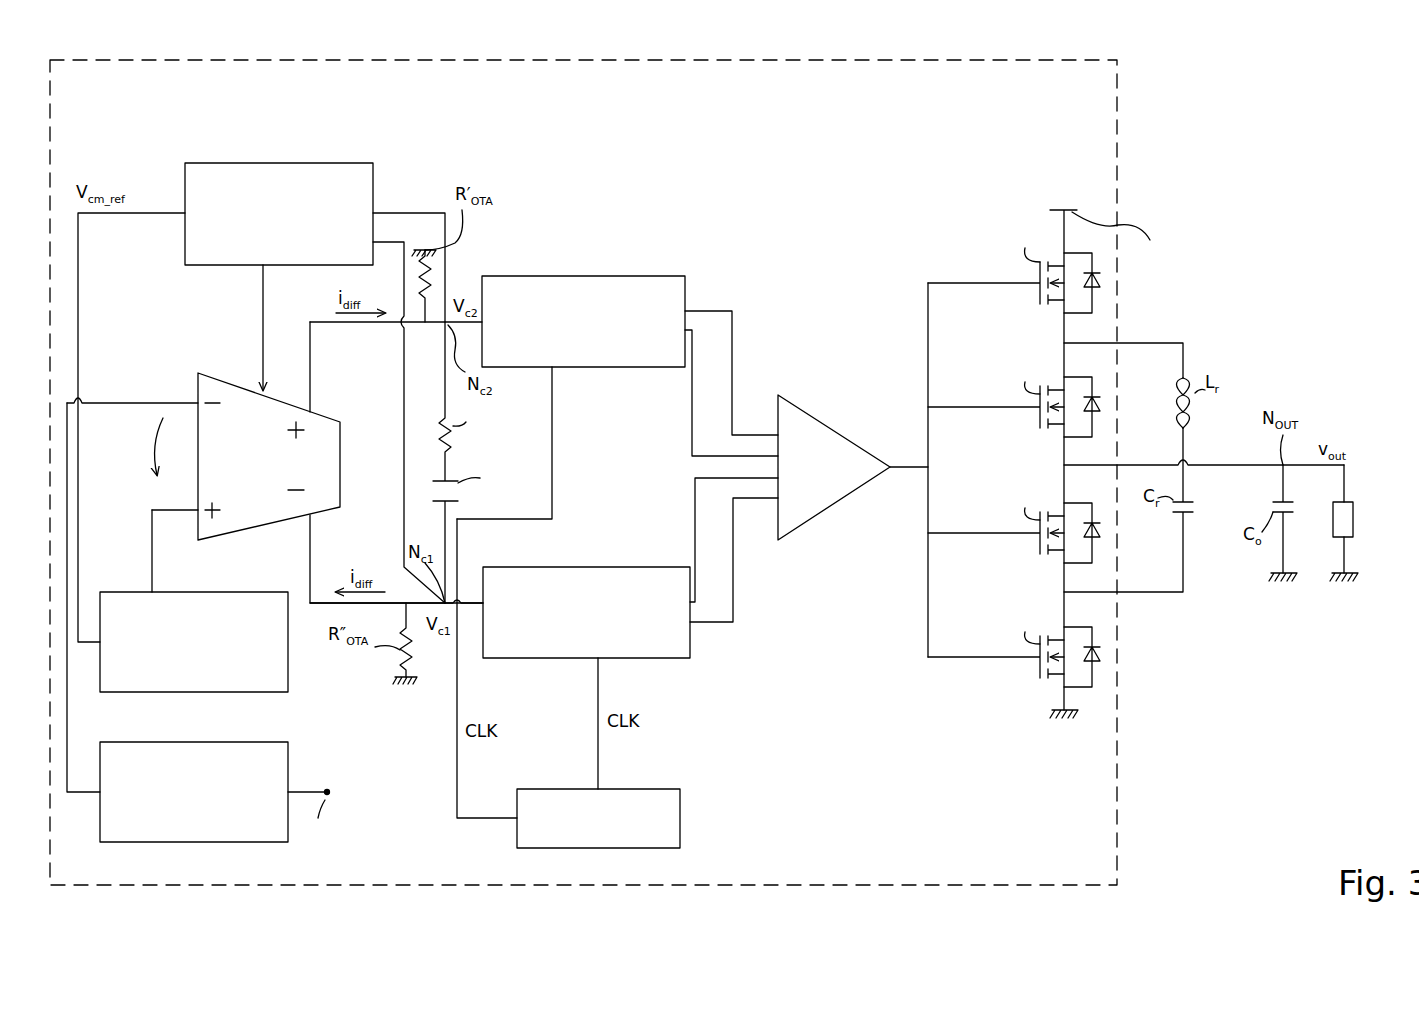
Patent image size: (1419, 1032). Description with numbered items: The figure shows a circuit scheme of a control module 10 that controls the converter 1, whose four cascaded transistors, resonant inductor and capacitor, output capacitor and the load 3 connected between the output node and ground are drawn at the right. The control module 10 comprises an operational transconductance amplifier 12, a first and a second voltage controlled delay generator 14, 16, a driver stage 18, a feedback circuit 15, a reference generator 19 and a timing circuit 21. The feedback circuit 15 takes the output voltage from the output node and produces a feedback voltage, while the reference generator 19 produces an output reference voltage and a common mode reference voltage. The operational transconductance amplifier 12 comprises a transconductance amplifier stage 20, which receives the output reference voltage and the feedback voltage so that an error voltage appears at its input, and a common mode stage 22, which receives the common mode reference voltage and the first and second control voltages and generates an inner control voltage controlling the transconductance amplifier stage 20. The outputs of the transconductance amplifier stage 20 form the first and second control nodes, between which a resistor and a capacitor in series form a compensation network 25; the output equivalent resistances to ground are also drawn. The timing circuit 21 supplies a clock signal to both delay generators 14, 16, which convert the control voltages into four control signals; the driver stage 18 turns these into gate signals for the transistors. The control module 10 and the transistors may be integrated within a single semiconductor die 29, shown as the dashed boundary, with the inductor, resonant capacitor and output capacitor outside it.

The converter 1 is at (905, 345).
The load 3 is at (1353, 515).
The control module 10 is at (805, 215).
The operational transconductance amplifier 12 is at (340, 140).
The first voltage controlled delay generator 14 is at (653, 567).
The feedback circuit 15 is at (208, 742).
The second voltage controlled delay generator 16 is at (682, 276).
The driver stage 18 is at (840, 438).
The reference generator 19 is at (278, 692).
The transconductance amplifier stage 20 is at (265, 515).
The timing circuit 21 is at (674, 800).
The common mode stage 22 is at (373, 185).
The compensation network 25 is at (495, 413).
The semiconductor die 29 is at (1117, 92).